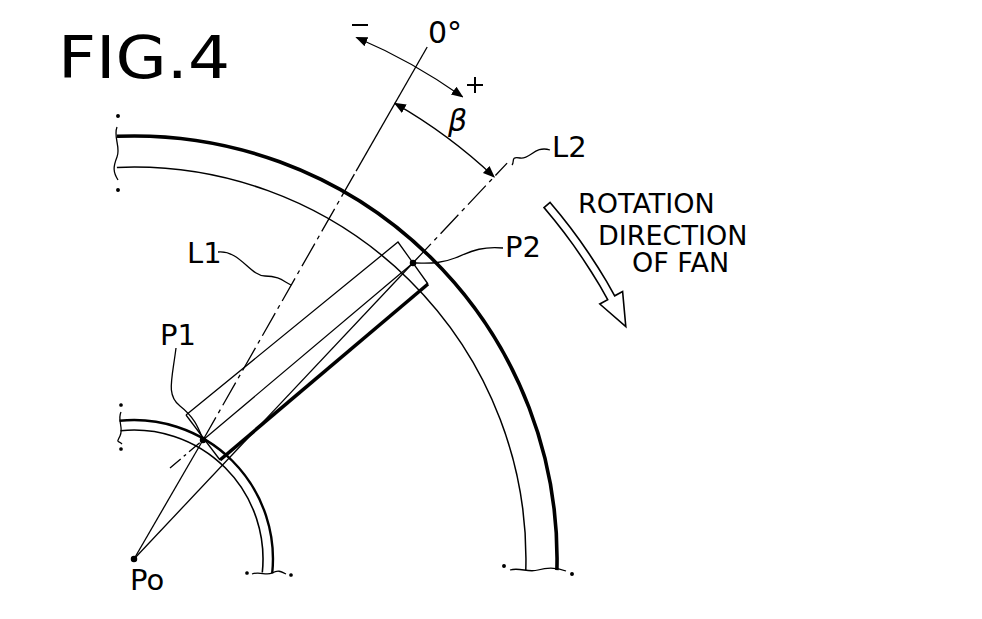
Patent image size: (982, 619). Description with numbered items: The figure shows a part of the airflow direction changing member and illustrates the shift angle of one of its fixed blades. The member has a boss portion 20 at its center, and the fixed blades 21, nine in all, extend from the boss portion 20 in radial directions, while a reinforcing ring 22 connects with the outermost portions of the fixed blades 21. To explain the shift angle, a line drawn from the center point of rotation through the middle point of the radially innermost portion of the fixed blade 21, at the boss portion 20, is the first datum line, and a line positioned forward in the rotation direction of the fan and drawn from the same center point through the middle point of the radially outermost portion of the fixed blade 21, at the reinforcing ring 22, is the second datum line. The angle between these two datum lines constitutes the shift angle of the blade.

The boss portion 20 is at (270, 523).
The fixed blade 21 is at (430, 288).
The reinforcing ring 22 is at (523, 455).